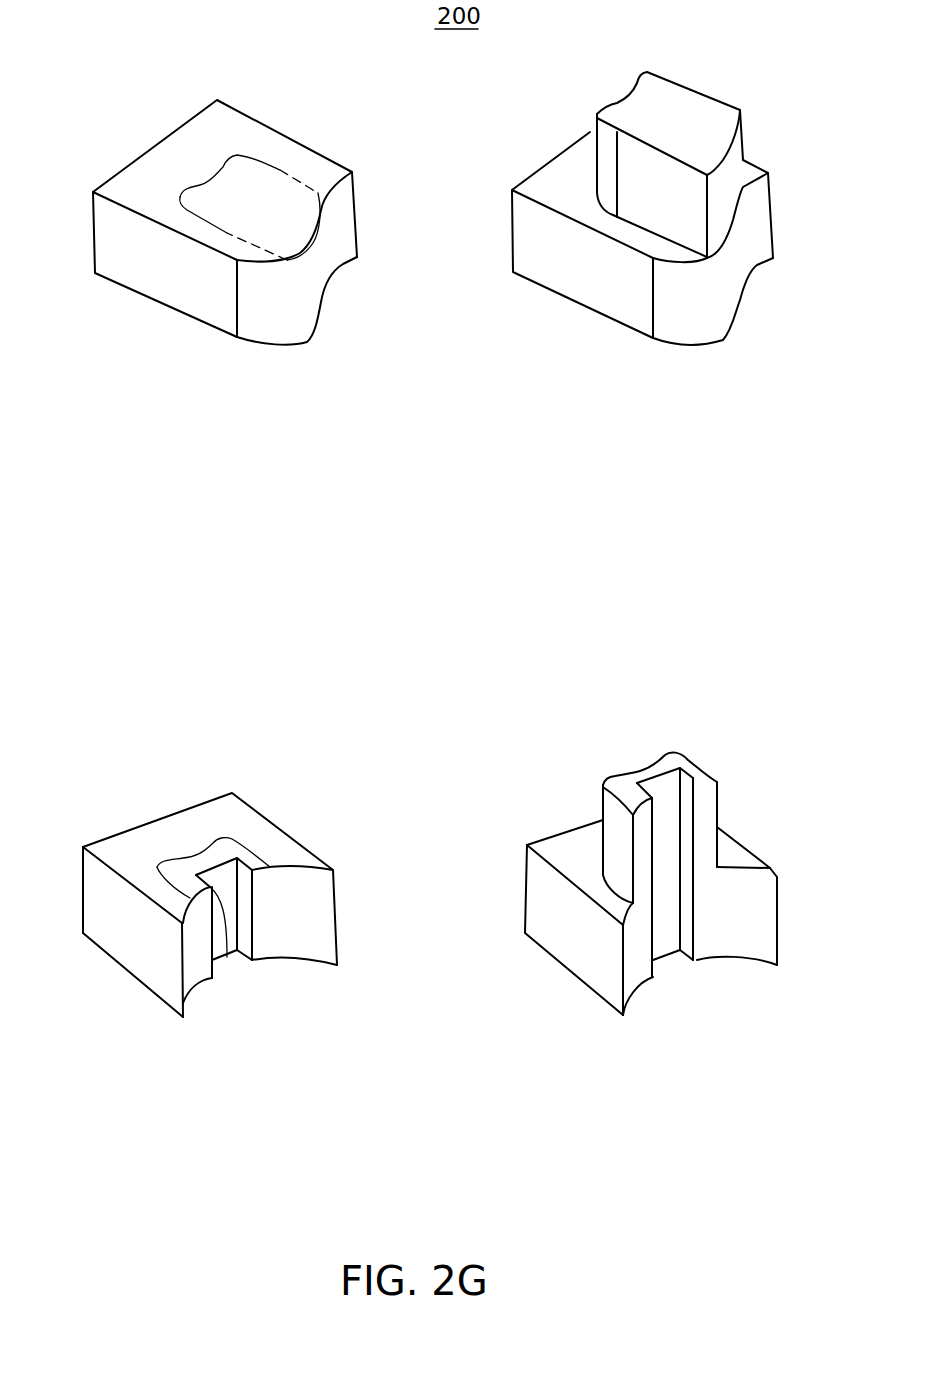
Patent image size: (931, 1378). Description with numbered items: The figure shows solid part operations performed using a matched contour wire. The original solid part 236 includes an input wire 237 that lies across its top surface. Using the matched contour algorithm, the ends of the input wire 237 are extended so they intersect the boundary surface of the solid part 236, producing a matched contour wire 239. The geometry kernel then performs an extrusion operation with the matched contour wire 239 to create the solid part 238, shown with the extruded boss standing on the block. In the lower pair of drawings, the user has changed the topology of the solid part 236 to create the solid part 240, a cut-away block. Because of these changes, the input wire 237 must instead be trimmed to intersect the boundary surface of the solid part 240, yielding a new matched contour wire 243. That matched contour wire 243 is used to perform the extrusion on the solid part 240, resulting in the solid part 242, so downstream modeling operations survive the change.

The solid part 236 is at (261, 274).
The input wire 237 is at (280, 170).
The solid part 238 is at (697, 356).
The matched contour wire 239 is at (320, 233).
The solid part 240 is at (210, 963).
The solid part 242 is at (677, 1046).
The matched contour wire 243 is at (227, 957).